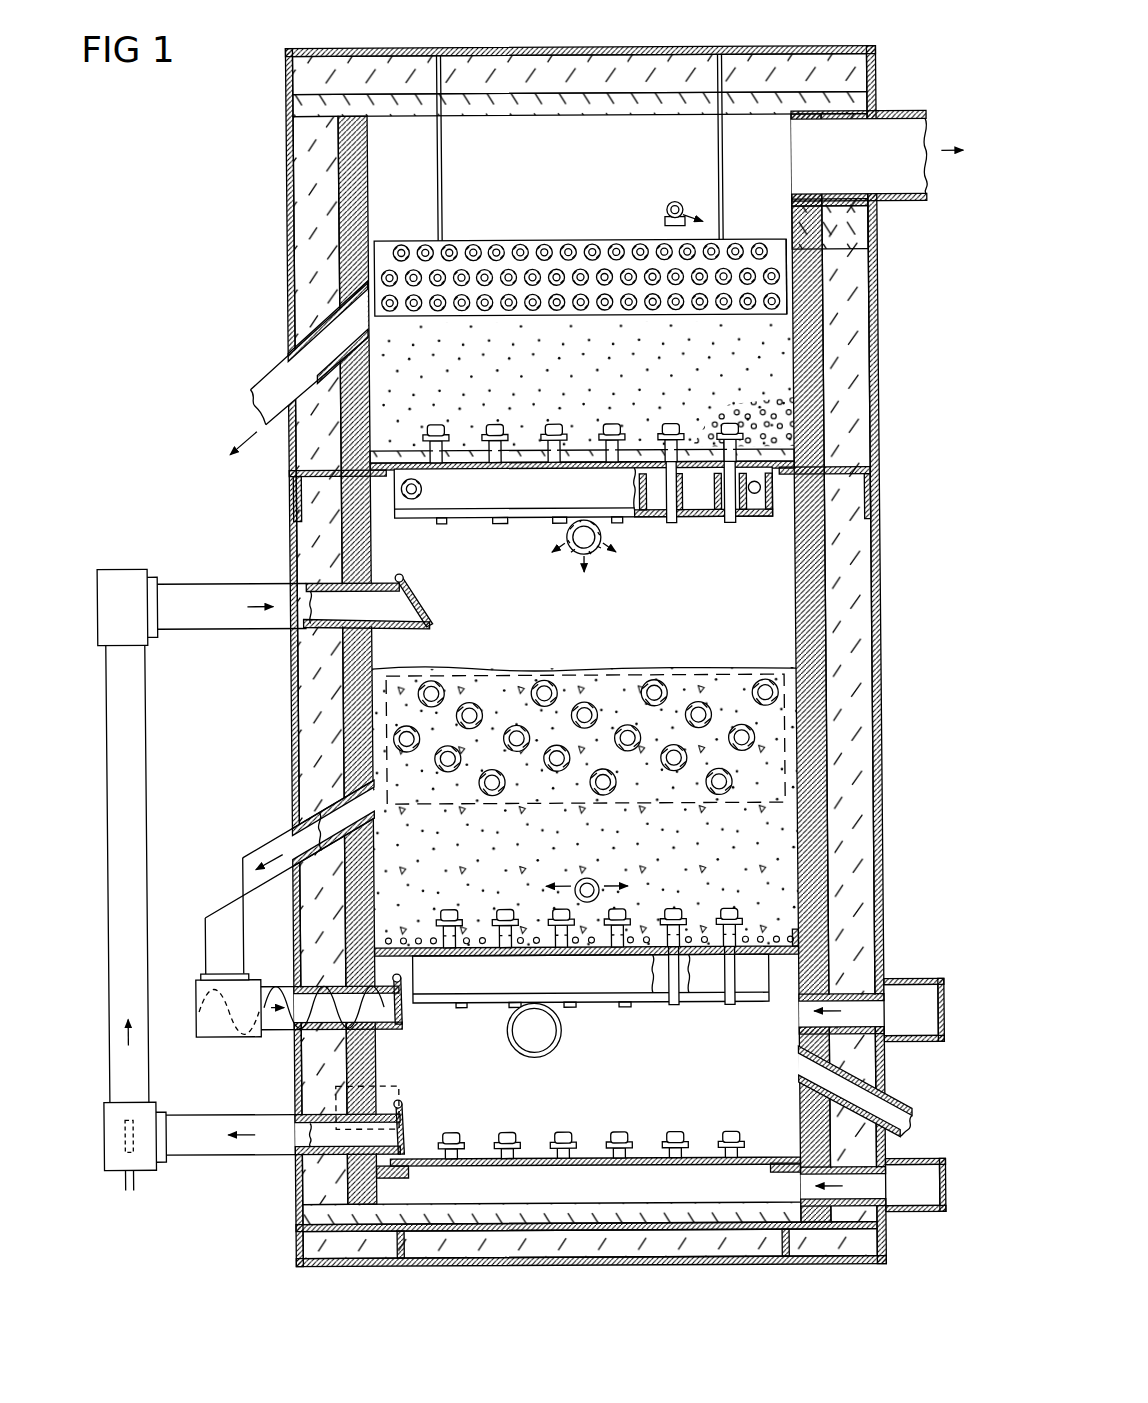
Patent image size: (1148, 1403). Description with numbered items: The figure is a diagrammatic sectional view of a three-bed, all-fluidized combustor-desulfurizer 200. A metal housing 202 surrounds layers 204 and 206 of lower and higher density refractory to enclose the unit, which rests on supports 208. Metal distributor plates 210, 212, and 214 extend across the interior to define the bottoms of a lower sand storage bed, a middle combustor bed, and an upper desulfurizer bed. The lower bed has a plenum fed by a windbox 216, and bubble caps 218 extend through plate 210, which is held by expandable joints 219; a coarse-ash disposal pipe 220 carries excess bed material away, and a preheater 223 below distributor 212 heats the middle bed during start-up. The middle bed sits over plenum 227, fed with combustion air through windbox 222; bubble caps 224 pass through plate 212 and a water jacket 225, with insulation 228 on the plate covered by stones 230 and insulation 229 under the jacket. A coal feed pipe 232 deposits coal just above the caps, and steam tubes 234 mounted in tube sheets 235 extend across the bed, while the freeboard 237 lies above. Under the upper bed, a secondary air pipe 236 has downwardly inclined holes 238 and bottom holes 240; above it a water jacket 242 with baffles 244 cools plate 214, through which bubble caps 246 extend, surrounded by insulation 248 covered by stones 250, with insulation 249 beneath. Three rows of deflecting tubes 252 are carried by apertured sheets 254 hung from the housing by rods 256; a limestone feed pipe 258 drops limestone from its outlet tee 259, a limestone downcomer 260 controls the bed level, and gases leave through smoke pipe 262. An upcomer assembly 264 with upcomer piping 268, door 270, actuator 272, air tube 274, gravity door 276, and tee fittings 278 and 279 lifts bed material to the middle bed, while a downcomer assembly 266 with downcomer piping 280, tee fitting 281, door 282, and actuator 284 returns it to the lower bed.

The combustor-desulfurizer 200 is at (203, 196).
The metal housing 202 is at (286, 262).
The lower density refractory layer 204 is at (295, 280).
The higher density refractory layer 206 is at (361, 195).
The supports 208 is at (332, 1265).
The distributor plate 210 is at (573, 1165).
The distributor plate 212 is at (535, 955).
The distributor plate 214 is at (587, 476).
The windbox 216 is at (904, 1165).
The bubble caps 218 is at (720, 1130).
The expandable joints 219 is at (408, 1173).
The coarse-ash disposal pipe 220 is at (891, 1108).
The windbox 222 is at (905, 980).
The preheater 223 is at (545, 1045).
The bubble caps 224 is at (723, 908).
The water jacket 225 is at (730, 1002).
The plenum 227 is at (598, 1030).
The insulation layer 228 is at (511, 930).
The insulation layer 229 is at (670, 1005).
The layer of stones 230 is at (786, 945).
The coal feed pipe 232 is at (586, 878).
The steam tubes 234 is at (571, 704).
The tube sheets 235 is at (773, 722).
The secondary air pipe 236 is at (548, 522).
The freeboard chamber 237 is at (690, 630).
The holes 238 is at (562, 545).
The holes 240 is at (582, 560).
The water jacket 242 is at (450, 512).
The baffles 244 is at (648, 496).
The bubble caps 246 is at (608, 427).
The insulation layer 248 is at (527, 450).
The insulation layer 249 is at (470, 523).
The layer of stones 250 is at (781, 437).
The tubes 252 is at (490, 292).
The apertured sheets 254 is at (775, 248).
The rods 256 is at (439, 72).
The limestone feed pipe 258 is at (661, 205).
The outlet tee 259 is at (653, 223).
The limestone downcomer 260 is at (253, 390).
The smoke pipe 262 is at (904, 112).
The upcomer assembly 264 is at (197, 573).
The downcomer assembly 266 is at (232, 853).
The upcomer piping 268 is at (141, 750).
The door 270 is at (389, 1122).
The actuator 272 is at (402, 1090).
The tube 274 is at (121, 1190).
The door 276 is at (426, 590).
The tee fitting 278 is at (106, 571).
The tee fitting 279 is at (91, 1170).
The downcomer piping 280 is at (196, 905).
The tee fitting 281 is at (214, 1032).
The door 282 is at (392, 1030).
The actuator 284 is at (398, 1000).